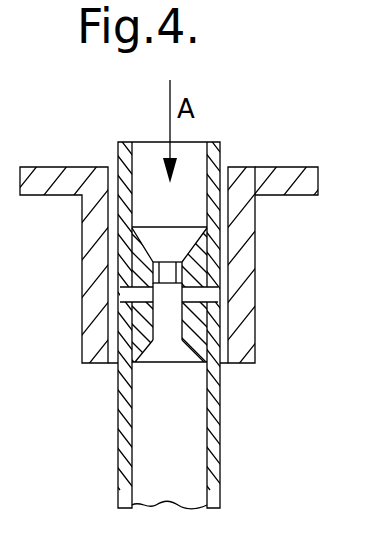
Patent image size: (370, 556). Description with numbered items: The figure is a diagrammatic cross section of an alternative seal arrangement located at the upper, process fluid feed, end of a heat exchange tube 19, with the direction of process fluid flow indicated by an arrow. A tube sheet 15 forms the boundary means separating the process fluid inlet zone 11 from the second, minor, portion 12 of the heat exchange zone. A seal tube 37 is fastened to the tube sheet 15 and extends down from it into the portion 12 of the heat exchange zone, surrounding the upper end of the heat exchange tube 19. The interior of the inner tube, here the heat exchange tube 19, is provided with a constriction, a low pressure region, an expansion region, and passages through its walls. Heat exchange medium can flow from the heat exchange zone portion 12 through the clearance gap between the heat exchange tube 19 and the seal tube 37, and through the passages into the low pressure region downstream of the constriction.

The process fluid inlet zone 11 is at (98, 150).
The second, minor, portion of the heat exchange zone 12 is at (70, 325).
The tube sheet 15 is at (288, 195).
The heat exchange tube 19 is at (220, 488).
The seal tube 37 is at (255, 338).